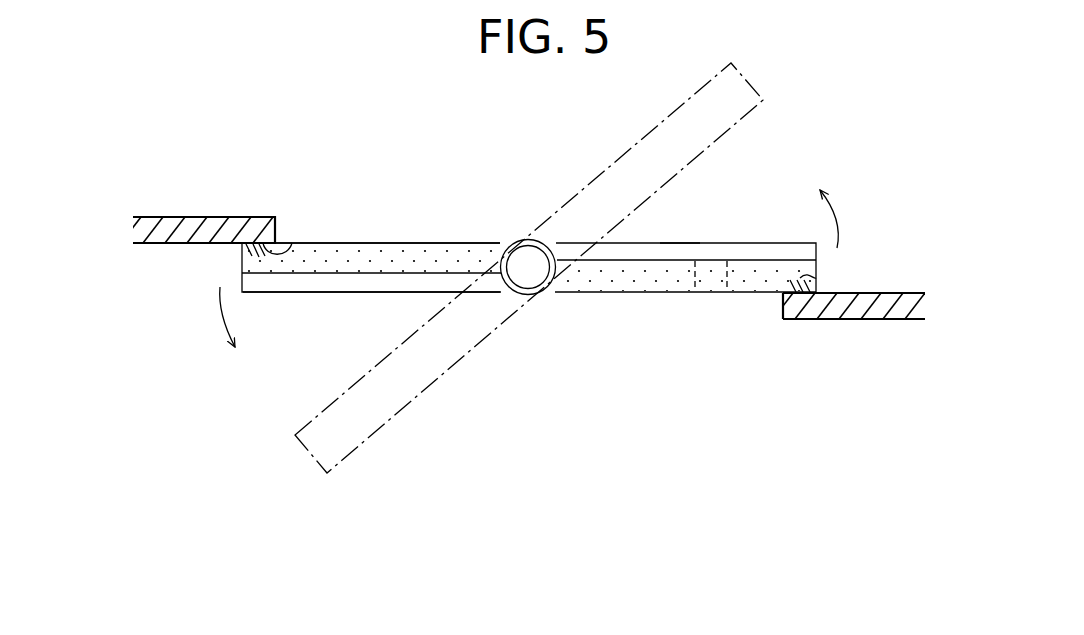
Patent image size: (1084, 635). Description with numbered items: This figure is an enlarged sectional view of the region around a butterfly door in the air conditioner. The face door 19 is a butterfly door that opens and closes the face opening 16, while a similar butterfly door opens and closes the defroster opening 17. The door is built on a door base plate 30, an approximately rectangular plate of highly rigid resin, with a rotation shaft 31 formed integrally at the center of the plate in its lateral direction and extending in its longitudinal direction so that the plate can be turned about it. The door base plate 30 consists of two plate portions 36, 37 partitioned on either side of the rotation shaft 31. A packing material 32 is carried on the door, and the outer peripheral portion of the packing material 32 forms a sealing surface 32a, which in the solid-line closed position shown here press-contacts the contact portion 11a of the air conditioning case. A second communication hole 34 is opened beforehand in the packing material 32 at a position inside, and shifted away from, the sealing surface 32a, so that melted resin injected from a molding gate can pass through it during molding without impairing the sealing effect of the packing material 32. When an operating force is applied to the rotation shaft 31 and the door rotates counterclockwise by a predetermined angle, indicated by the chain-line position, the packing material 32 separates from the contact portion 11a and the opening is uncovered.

The contact portion 11a is at (213, 228).
The face opening 16 is at (372, 218).
The defroster opening 17 is at (403, 232).
The face door 19 is at (403, 184).
The door base plate 30 is at (685, 276).
The rotation shaft 31 is at (533, 272).
The packing material 32 is at (647, 294).
The sealing surface 32a is at (297, 248).
The second communication hole 34 is at (738, 293).
The plate portion 36 is at (305, 287).
The plate portion 37 is at (680, 243).